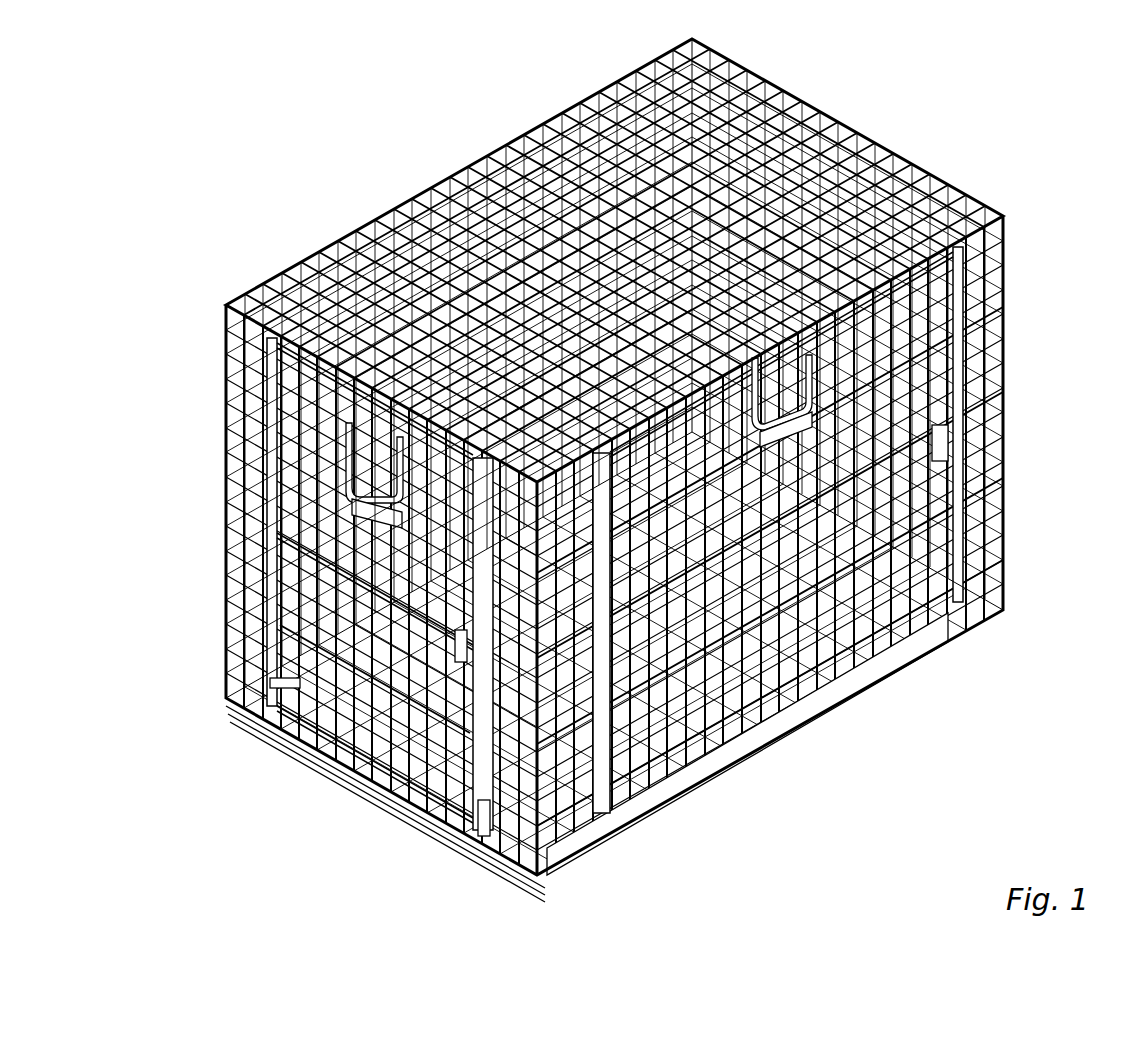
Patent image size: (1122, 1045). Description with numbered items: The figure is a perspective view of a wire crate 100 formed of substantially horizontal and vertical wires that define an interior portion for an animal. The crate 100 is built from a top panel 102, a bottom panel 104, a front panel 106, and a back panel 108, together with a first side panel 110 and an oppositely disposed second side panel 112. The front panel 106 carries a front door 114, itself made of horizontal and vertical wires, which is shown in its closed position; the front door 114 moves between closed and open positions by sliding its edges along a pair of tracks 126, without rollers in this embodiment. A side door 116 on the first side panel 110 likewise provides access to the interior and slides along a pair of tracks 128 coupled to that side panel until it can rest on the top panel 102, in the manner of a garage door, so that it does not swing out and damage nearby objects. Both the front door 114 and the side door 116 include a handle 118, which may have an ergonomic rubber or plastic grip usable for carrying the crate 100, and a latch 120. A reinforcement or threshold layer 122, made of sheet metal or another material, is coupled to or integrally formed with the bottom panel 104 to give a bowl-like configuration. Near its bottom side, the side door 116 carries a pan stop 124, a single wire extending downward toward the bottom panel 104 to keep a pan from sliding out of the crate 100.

The crate 100 is at (205, 121).
The top panel 102 is at (860, 150).
The bottom panel 104 is at (598, 866).
The front panel 106 is at (1000, 315).
The back panel 108 is at (212, 388).
The first side panel 110 is at (240, 560).
The second side panel 112 is at (1021, 271).
The front door 114 is at (880, 556).
The side door 116 is at (330, 645).
The handle 118 is at (820, 385).
The latch 120 is at (945, 450).
The reinforcement layer 122 is at (845, 690).
The pan stop 124 is at (432, 820).
The pair of tracks 126 is at (960, 597).
The pair of tracks 128 is at (484, 800).